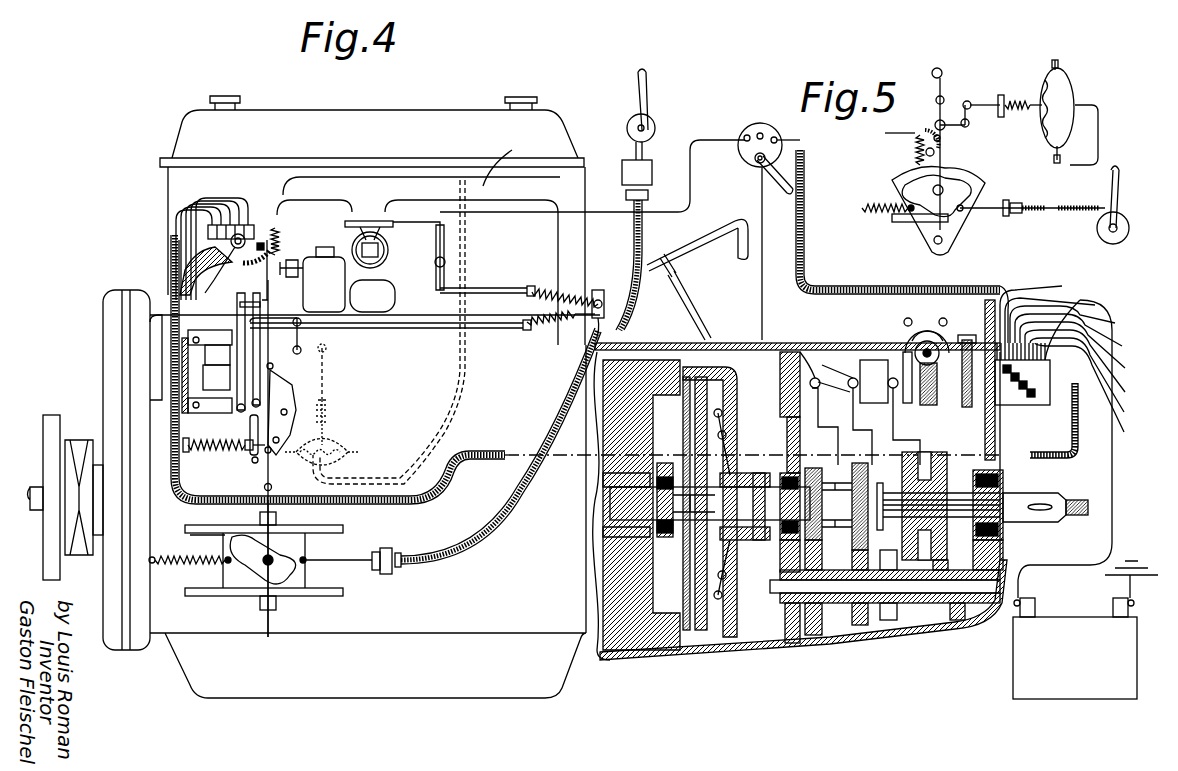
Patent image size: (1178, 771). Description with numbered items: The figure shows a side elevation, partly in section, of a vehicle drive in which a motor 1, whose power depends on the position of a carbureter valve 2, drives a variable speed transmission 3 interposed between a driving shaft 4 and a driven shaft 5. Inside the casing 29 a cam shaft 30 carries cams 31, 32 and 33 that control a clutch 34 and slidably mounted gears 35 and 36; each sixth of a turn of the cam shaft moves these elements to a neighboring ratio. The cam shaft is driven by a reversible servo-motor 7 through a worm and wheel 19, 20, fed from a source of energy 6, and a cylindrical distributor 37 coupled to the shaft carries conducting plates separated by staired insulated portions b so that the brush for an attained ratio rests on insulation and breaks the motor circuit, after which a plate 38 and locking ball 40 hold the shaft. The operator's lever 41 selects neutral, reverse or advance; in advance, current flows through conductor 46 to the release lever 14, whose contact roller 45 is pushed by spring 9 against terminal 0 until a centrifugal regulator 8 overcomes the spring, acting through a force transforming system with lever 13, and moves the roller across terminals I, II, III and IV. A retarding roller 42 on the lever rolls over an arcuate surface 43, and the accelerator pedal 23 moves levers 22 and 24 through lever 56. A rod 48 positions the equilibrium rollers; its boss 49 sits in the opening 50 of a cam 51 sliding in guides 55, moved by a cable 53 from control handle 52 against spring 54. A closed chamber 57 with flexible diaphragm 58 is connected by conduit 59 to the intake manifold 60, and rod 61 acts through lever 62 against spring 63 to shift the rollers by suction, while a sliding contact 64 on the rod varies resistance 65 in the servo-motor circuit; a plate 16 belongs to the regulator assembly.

In FIG. 4, the motor 1 is at (392, 130).
In FIG. 4, the carbureter valve 2 is at (388, 250).
In FIG. 4, the variable speed transmission 3 is at (885, 545).
In FIG. 4, the driving shaft 4 is at (624, 512).
In FIG. 4, the driven shaft 5 is at (1035, 512).
In FIG. 4, the source of energy 6 is at (1066, 640).
In FIG. 4, the servo-motor 7 is at (938, 345).
In FIG. 4, the centrifugal regulator 8 is at (215, 414).
In FIG. 4, the spring 9 is at (212, 452).
In FIG. 4, the lever 13 is at (291, 400).
In FIG. 4, the lever 14 is at (262, 332).
In FIG. 4, the armature 16 is at (224, 375).
In FIG. 4, the worm 19 is at (925, 338).
In FIG. 4, the wheel 20 is at (968, 335).
In FIG. 4, the lever 22 is at (500, 283).
In FIG. 4, the accelerator pedal 23 is at (700, 262).
In FIG. 4, the lever 24 is at (450, 330).
In FIG. 4, the casing 29 is at (833, 640).
In FIG. 4, the cam shaft 30 is at (940, 400).
In FIG. 4, the cam 31 is at (808, 352).
In FIG. 4, the cam 32 is at (832, 362).
In FIG. 4, the cam 33 is at (896, 362).
In FIG. 4, the clutch 34 is at (718, 640).
In FIG. 4, the slidably mounted gear 35 is at (858, 585).
In FIG. 4, the slidably mounted gear 36 is at (940, 560).
In FIG. 4, the cylindrical distributor 37 is at (1100, 420).
In FIG. 4, the plate 38 is at (1010, 460).
In FIG. 4, the locking ball 40 is at (1015, 320).
In FIG. 4, the lever 41 is at (742, 160).
In FIG. 4, the retarding roller 42 is at (178, 262).
In FIG. 4, the arcuate surface 43 is at (195, 292).
In FIG. 4, the contact roller 45 is at (262, 255).
In FIG. 4, the conductor 46 is at (530, 215).
In FIG. 4, the rod 48 is at (274, 488).
In FIG. 5, the rod 48 is at (945, 140).
In FIG. 4, the boss 49 is at (272, 565).
In FIG. 5, the boss 49 is at (935, 195).
In FIG. 4, the opening 50 is at (276, 572).
In FIG. 5, the opening 50 is at (950, 186).
In FIG. 4, the cam 51 is at (230, 550).
In FIG. 5, the cam 51 is at (972, 192).
In FIG. 4, the control handle 52 is at (650, 112).
In FIG. 5, the control handle 52 is at (1110, 200).
In FIG. 4, the cable 53 is at (512, 500).
In FIG. 5, the cable 53 is at (1030, 214).
In FIG. 4, the spring 54 is at (190, 565).
In FIG. 5, the spring 54 is at (880, 204).
In FIG. 4, the guides 55 is at (213, 596).
In FIG. 4, the lever 56 is at (590, 322).
In FIG. 4, the closed chamber 57 is at (346, 458).
In FIG. 5, the closed chamber 57 is at (1068, 85).
In FIG. 4, the flexible diaphragm 58 is at (350, 446).
In FIG. 5, the flexible diaphragm 58 is at (1042, 130).
In FIG. 4, the conduit 59 is at (466, 388).
In FIG. 5, the conduit 59 is at (1098, 142).
In FIG. 4, the intake manifold 60 is at (505, 156).
In FIG. 4, the rod 61 is at (330, 390).
In FIG. 5, the rod 61 is at (986, 103).
In FIG. 4, the lever 62 is at (330, 354).
In FIG. 5, the lever 62 is at (962, 112).
In FIG. 4, the spring 63 is at (333, 414).
In FIG. 5, the spring 63 is at (1012, 100).
In FIG. 4, the insulated sliding contact 64 is at (265, 246).
In FIG. 5, the insulated sliding contact 64 is at (940, 150).
In FIG. 4, the resistance 65 is at (281, 228).
In FIG. 5, the resistance 65 is at (914, 150).
In FIG. 4, the terminal 0 is at (212, 225).
In FIG. 4, the terminal I is at (221, 225).
In FIG. 4, the terminal II is at (230, 225).
In FIG. 4, the terminal III is at (239, 225).
In FIG. 4, the terminal IV is at (248, 228).
In FIG. 4, the insulated portion b is at (1030, 408).